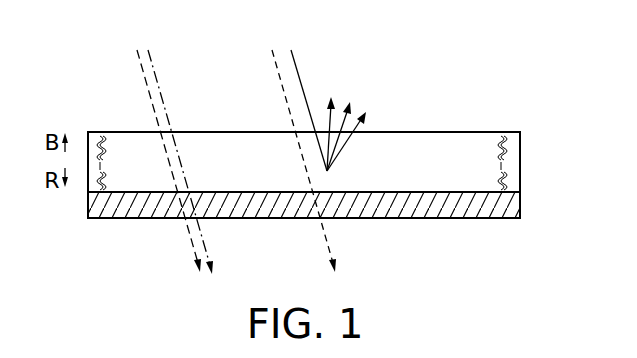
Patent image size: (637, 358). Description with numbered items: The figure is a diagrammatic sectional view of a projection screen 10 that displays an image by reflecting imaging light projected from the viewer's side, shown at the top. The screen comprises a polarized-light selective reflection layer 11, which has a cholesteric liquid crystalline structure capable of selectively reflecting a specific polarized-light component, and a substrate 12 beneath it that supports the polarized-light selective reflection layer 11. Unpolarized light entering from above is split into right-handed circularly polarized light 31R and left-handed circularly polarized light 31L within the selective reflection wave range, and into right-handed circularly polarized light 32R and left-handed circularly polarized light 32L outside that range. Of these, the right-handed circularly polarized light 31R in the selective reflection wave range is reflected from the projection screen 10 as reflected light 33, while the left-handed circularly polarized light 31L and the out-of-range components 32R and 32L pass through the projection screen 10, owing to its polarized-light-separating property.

The projection screen 10 is at (536, 104).
The polarized-light selective reflection layer 11 is at (516, 157).
The substrate 12 is at (518, 202).
The left-handed circularly polarized light 31L is at (273, 62).
The right-handed circularly polarized light 31R is at (292, 56).
The left-handed circularly polarized light 32L is at (136, 61).
The right-handed circularly polarized light 32R is at (151, 62).
The reflected light 33 is at (323, 92).